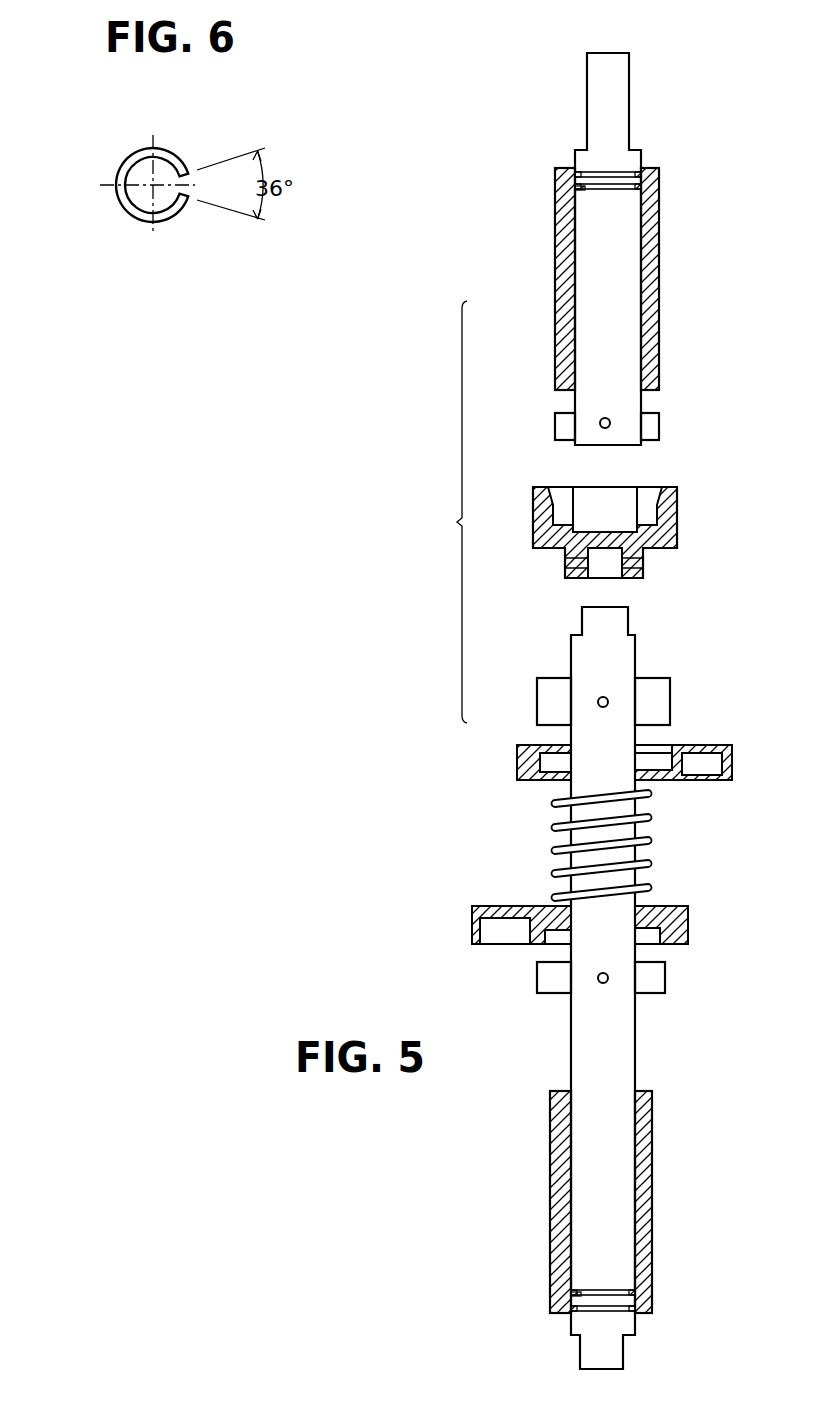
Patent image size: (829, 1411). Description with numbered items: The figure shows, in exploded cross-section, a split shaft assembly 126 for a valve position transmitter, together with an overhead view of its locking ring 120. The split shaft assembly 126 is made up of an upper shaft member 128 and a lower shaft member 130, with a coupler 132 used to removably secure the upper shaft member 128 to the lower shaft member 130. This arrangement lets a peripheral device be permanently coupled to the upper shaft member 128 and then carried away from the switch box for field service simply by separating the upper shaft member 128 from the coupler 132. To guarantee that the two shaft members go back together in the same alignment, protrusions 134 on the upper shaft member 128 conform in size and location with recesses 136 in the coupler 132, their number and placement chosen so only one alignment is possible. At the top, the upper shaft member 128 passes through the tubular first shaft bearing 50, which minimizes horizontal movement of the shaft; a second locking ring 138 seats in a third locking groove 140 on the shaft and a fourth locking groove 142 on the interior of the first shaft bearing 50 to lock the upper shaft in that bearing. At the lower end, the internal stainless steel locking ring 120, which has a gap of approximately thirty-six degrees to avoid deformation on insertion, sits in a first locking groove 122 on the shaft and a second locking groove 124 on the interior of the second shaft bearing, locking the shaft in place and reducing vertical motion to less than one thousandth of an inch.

In FIG. 5, the first shaft bearing 50 is at (566, 343).
In FIG. 6, the locking ring 120 is at (128, 165).
In FIG. 5, the locking ring 120 is at (636, 1292).
In FIG. 5, the first locking groove 122 is at (590, 1290).
In FIG. 5, the second locking groove 124 is at (567, 1299).
In FIG. 5, the split shaft assembly 126 is at (436, 512).
In FIG. 5, the upper shaft member 128 is at (617, 319).
In FIG. 5, the lower shaft member 130 is at (621, 1042).
In FIG. 5, the coupler 132 is at (655, 515).
In FIG. 5, the protrusions 134 is at (655, 424).
In FIG. 5, the recesses 136 is at (649, 494).
In FIG. 5, the second locking ring 138 is at (640, 187).
In FIG. 5, the third locking groove 140 is at (612, 193).
In FIG. 5, the fourth locking groove 142 is at (576, 188).